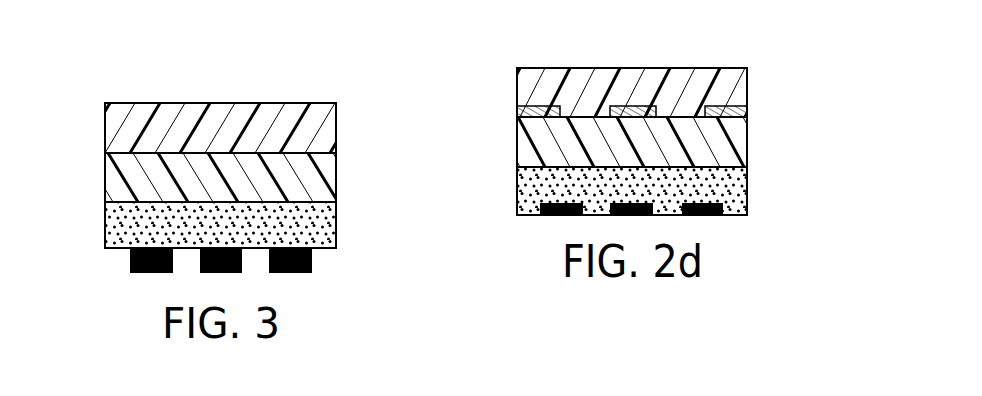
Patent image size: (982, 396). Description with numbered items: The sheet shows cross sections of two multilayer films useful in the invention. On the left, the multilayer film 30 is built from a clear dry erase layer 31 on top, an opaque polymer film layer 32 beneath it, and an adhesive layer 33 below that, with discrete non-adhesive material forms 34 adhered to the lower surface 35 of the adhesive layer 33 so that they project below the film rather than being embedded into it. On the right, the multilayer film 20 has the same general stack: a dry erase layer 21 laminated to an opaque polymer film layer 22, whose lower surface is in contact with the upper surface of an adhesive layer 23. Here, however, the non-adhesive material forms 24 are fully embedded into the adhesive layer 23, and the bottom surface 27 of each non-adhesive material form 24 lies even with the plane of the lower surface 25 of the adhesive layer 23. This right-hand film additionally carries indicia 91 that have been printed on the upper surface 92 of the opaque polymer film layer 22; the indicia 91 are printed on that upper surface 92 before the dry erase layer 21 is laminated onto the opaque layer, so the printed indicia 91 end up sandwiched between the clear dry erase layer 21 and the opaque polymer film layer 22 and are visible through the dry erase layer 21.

In FIG. 3, the multilayer film 30 is at (150, 78).
In FIG. 3, the dry erase layer 31 is at (337, 128).
In FIG. 3, the opaque polymer film layer 32 is at (337, 178).
In FIG. 3, the adhesive layer 33 is at (337, 230).
In FIG. 3, the non-adhesive material forms 34 is at (287, 275).
In FIG. 3, the lower surface 35 is at (118, 250).
In FIG. 2d, the multilayer film 20 is at (561, 43).
In FIG. 2d, the dry erase layer 21 is at (748, 87).
In FIG. 2d, the opaque polymer film layer 22 is at (748, 146).
In FIG. 2d, the adhesive layer 23 is at (748, 192).
In FIG. 2d, the non-adhesive material forms 24 is at (637, 217).
In FIG. 2d, the lower surface 25 is at (528, 216).
In FIG. 2d, the bottom surface 27 is at (555, 216).
In FIG. 2d, the indicia 91 is at (623, 107).
In FIG. 2d, the upper surface 92 is at (680, 116).